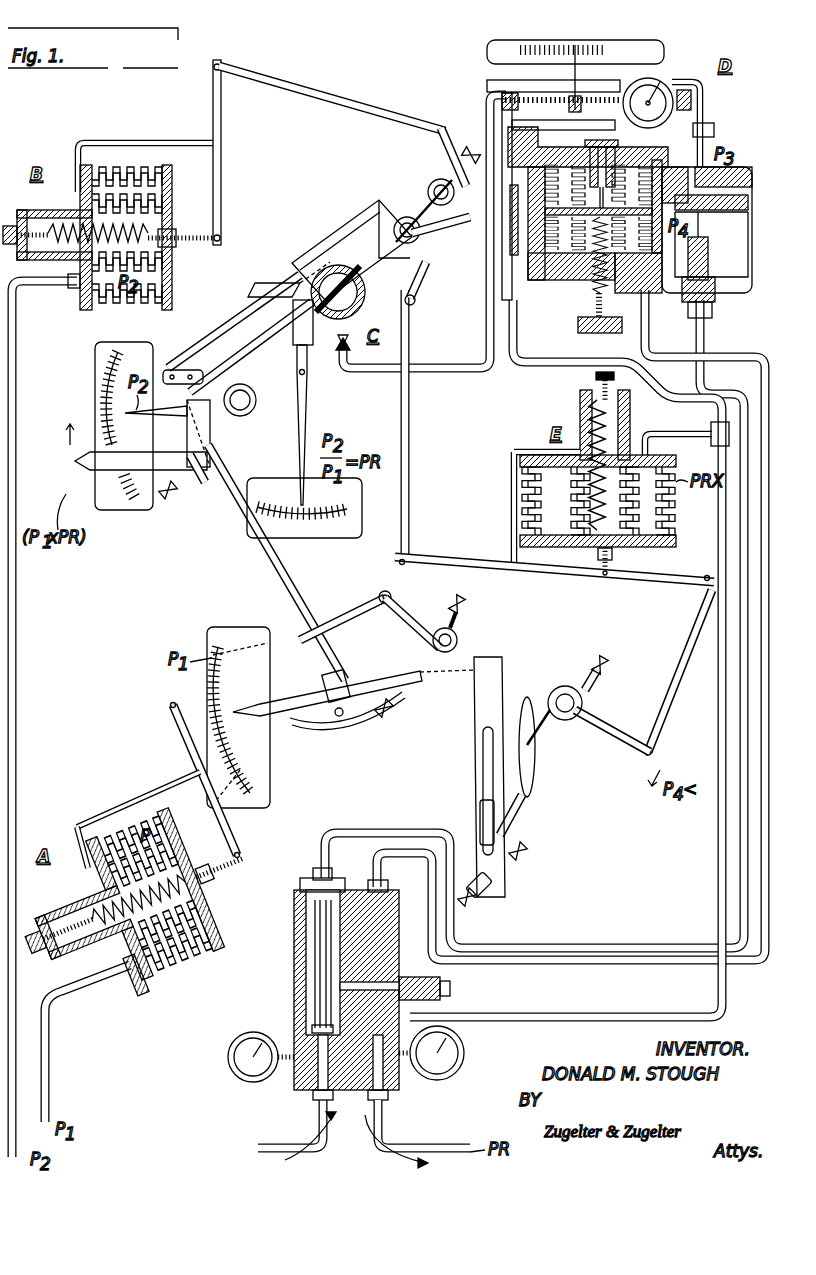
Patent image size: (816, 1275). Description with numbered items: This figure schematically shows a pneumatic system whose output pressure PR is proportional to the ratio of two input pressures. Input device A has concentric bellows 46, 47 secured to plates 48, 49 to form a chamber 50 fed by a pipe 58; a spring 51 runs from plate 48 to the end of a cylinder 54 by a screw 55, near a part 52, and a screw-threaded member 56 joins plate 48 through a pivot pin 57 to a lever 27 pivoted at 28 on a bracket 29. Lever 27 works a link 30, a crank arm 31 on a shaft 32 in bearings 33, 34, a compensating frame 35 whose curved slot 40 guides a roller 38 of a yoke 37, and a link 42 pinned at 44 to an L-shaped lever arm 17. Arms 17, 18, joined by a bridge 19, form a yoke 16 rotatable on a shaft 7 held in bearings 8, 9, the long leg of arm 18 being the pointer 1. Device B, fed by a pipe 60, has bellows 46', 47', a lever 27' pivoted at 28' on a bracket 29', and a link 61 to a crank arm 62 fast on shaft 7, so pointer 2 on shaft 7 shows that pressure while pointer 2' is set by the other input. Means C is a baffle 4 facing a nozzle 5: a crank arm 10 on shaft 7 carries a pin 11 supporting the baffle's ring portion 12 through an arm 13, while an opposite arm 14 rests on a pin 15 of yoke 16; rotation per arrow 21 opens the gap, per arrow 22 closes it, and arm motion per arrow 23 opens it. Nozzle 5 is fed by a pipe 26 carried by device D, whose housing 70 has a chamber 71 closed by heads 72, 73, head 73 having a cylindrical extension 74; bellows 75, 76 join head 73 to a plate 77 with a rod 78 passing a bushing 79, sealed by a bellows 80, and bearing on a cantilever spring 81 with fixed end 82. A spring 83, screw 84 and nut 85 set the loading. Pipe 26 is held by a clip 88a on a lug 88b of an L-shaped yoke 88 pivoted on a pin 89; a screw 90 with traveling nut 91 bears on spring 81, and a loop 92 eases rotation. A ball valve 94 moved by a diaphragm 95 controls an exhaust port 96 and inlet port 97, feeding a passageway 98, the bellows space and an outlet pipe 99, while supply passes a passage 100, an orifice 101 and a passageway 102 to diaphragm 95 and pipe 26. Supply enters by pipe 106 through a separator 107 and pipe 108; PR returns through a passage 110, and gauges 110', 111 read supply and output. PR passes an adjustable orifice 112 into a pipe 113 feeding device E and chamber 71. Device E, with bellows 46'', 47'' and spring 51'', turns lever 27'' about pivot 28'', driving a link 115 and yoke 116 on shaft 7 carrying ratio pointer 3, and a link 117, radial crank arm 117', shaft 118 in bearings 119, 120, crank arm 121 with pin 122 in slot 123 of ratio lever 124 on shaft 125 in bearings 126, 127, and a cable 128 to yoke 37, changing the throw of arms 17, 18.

The pointer 1 is at (78, 464).
The pointer 2 is at (156, 428).
The pointer 2' is at (238, 717).
The pointer 3 is at (308, 400).
The baffle 4 is at (355, 255).
The nozzle 5 is at (338, 358).
The shaft 7 is at (428, 193).
The bearing 8 is at (460, 118).
The bearing 9 is at (172, 498).
The crank arm 10 is at (470, 228).
The support pin 11 is at (455, 240).
The ring portion 12 is at (330, 262).
The arm 13 is at (413, 306).
The arm 14 is at (280, 280).
The pin 15 is at (245, 310).
The yoke 16 is at (240, 330).
The L-shaped lever arm 17 is at (192, 370).
The L-shaped lever arm 18 is at (148, 508).
The bridge 19 is at (262, 305).
The arrow 21 is at (190, 480).
The arrow 22 is at (228, 438).
The arrow 23 is at (57, 436).
The nozzle pipe 26 is at (448, 370).
The lever 27 is at (186, 780).
The lever 27' is at (239, 152).
The lever 27'' is at (644, 569).
The pivot pin 28 is at (138, 795).
The pivot 28' is at (243, 147).
The pivot 28'' is at (554, 584).
The bracket 29 is at (72, 829).
The bracket 29' is at (145, 149).
The link 30 is at (325, 628).
The crank arm 31 is at (408, 618).
The shaft 32 is at (460, 632).
The bearing 33 is at (465, 603).
The bearing 34 is at (388, 718).
The compensating frame 35 is at (292, 722).
The yoke 37 is at (348, 675).
The roller 38 is at (322, 730).
The curved slot 40 is at (344, 722).
The link 42 is at (270, 570).
The pin 44 is at (170, 370).
The bellows 46 is at (166, 894).
The bellows 46' is at (142, 237).
The bellows 46'' is at (620, 501).
The bellows 47 is at (224, 966).
The bellows 47' is at (127, 291).
The bellows 47'' is at (670, 504).
The plate 48 is at (218, 930).
The plate 49 is at (148, 988).
The pressure-tight chamber 50 is at (167, 940).
The spring 51 is at (108, 544).
The spring 51'' is at (621, 467).
The fitting 52 is at (21, 964).
The cylinder 54 is at (100, 972).
The screw 55 is at (48, 920).
The screw-threaded member 56 is at (218, 862).
The pivot pin 57 is at (238, 845).
The pipe 58 is at (50, 1068).
The pipe 60 is at (20, 625).
The link 61 is at (362, 110).
The crank arm 62 is at (435, 145).
The housing 70 is at (528, 250).
The chamber 71 is at (508, 188).
The head 72 is at (500, 100).
The head 73 is at (528, 290).
The cylindrical extension 74 is at (696, 335).
The bellows 75 is at (528, 270).
The bellows 76 is at (592, 238).
The plate 77 is at (565, 207).
The rod 78 is at (618, 200).
The bushing 79 is at (564, 116).
The bellows 80 is at (588, 147).
The cantilever spring 81 is at (500, 84).
The fixed end 82 is at (510, 108).
The spring 83 is at (588, 290).
The screw 84 is at (580, 318).
The nut 85 is at (590, 330).
The yoke 88 is at (628, 44).
The clip 88a is at (498, 72).
The lug 88b is at (488, 82).
The pin 89 is at (662, 86).
The screw 90 is at (556, 48).
The traveling nut 91 is at (582, 50).
The loop 92 is at (656, 78).
The valve 94 is at (715, 300).
The diaphragm 95 is at (745, 220).
The exhaust port 96 is at (745, 240).
The inlet port 97 is at (740, 290).
The passageway 98 is at (645, 305).
The outlet pipe 99 is at (645, 345).
The passage 100 is at (738, 270).
The orifice 101 is at (752, 205).
The passageway 102 is at (752, 186).
The supply pipe 106 is at (268, 1148).
The separator 107 is at (320, 990).
The pipe 108 is at (706, 340).
The passage 110 is at (550, 645).
The gauge 110' is at (236, 1065).
The gauge 111 is at (466, 1050).
The adjustable orifice 112 is at (446, 948).
The pipe 113 is at (550, 368).
The link 115 is at (410, 444).
The yoke 116 is at (370, 203).
The link 117 is at (668, 672).
The radial crank arm 117' is at (650, 731).
The shaft 118 is at (598, 678).
The bearing 119 is at (600, 658).
The bearing 120 is at (548, 758).
The crank arm 121 is at (530, 700).
The pin 122 is at (520, 800).
The slot 123 is at (480, 775).
The ratio lever 124 is at (482, 695).
The shaft 125 is at (495, 883).
The bearing 126 is at (478, 900).
The bearing 127 is at (530, 853).
The cable 128 is at (475, 672).